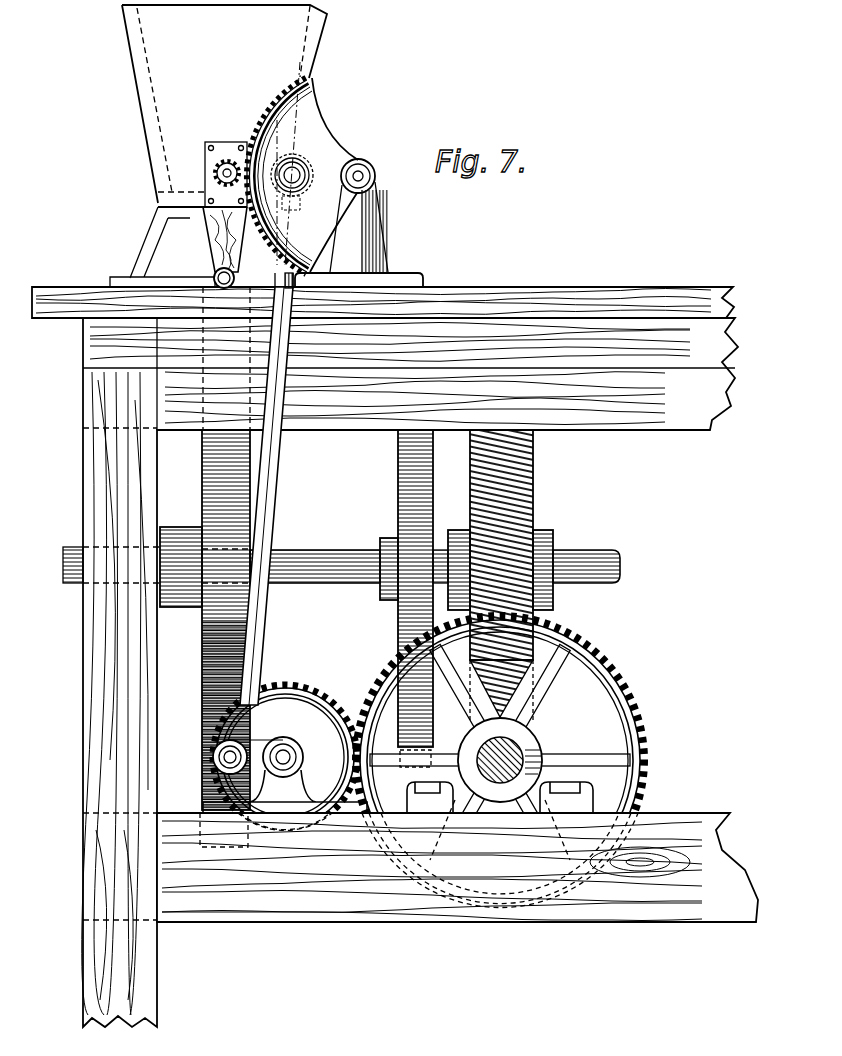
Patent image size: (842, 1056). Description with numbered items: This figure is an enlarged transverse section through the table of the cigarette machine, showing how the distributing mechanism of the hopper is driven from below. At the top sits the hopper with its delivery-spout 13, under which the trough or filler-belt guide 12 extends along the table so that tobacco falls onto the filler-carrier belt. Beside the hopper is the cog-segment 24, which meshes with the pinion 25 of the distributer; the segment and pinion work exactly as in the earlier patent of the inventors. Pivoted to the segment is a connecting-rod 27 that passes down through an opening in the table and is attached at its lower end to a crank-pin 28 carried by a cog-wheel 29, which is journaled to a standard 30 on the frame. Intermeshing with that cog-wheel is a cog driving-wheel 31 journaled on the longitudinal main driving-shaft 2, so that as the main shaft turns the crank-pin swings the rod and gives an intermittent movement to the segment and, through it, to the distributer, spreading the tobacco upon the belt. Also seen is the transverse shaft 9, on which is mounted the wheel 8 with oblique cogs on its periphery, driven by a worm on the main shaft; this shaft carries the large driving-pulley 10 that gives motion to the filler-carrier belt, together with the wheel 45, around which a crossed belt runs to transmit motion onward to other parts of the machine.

The longitudinal main driving-shaft 2 is at (488, 756).
The wheel with oblique cogs 8 is at (520, 494).
The transverse shaft 9 is at (592, 563).
The large driving-pulley 10 is at (226, 548).
The trough or filler-belt guide 12 is at (234, 280).
The delivery-spout of the hopper 13 is at (213, 240).
The cog-segment 24 is at (355, 190).
The pinion of the distributer 25 is at (214, 170).
The connecting-rod 27 is at (252, 660).
The crank-pin 28 is at (213, 757).
The cog-wheel 29 is at (238, 736).
The standard 30 is at (285, 775).
The cog driving-wheel 31 is at (500, 760).
The wheel on the shaft 45 is at (433, 500).